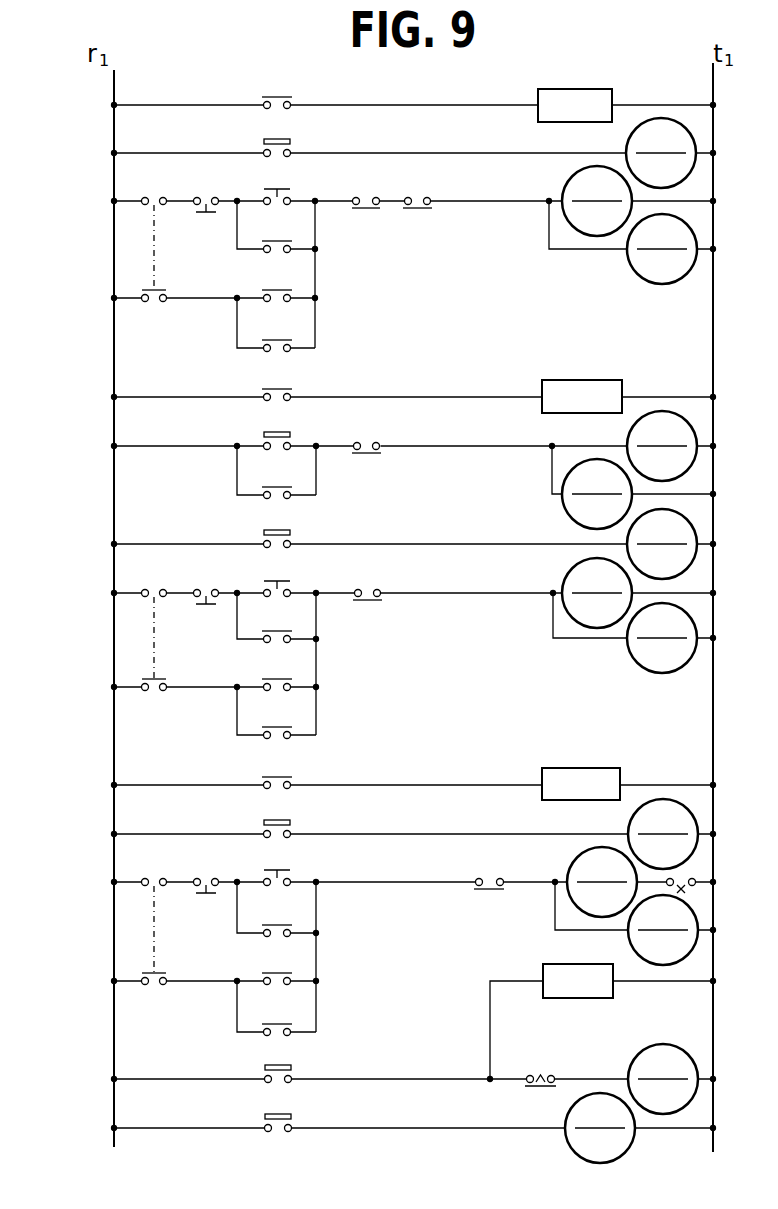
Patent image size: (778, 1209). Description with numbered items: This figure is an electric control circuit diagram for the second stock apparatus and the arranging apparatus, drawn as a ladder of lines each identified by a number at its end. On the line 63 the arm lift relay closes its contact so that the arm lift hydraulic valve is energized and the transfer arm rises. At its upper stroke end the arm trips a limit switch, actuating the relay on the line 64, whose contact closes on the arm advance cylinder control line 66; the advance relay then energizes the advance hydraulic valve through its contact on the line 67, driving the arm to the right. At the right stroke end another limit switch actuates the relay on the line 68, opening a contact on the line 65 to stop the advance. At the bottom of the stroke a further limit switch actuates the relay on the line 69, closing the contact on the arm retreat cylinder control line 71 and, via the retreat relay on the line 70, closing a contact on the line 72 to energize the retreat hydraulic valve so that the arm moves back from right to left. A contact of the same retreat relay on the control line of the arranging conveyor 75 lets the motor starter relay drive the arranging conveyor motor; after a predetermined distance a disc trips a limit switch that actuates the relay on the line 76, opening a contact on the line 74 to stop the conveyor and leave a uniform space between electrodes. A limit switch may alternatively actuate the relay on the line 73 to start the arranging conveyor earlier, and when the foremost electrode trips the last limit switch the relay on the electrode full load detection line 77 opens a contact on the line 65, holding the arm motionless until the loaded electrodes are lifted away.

The line 63 is at (387, 96).
The line 64 is at (387, 151).
The line 65 is at (387, 256).
The arm advance cylinder control line 66 is at (188, 308).
The line 67 is at (387, 388).
The line 68 is at (387, 468).
The line 69 is at (387, 542).
The line 70 is at (387, 645).
The arm retreat cylinder control line 71 is at (189, 696).
The line 72 is at (387, 775).
The line 73 is at (387, 832).
The line 74 is at (387, 938).
The control line of the arranging conveyor 75 is at (387, 1013).
The line 76 is at (387, 1077).
The electrode full load detection line 77 is at (387, 1126).